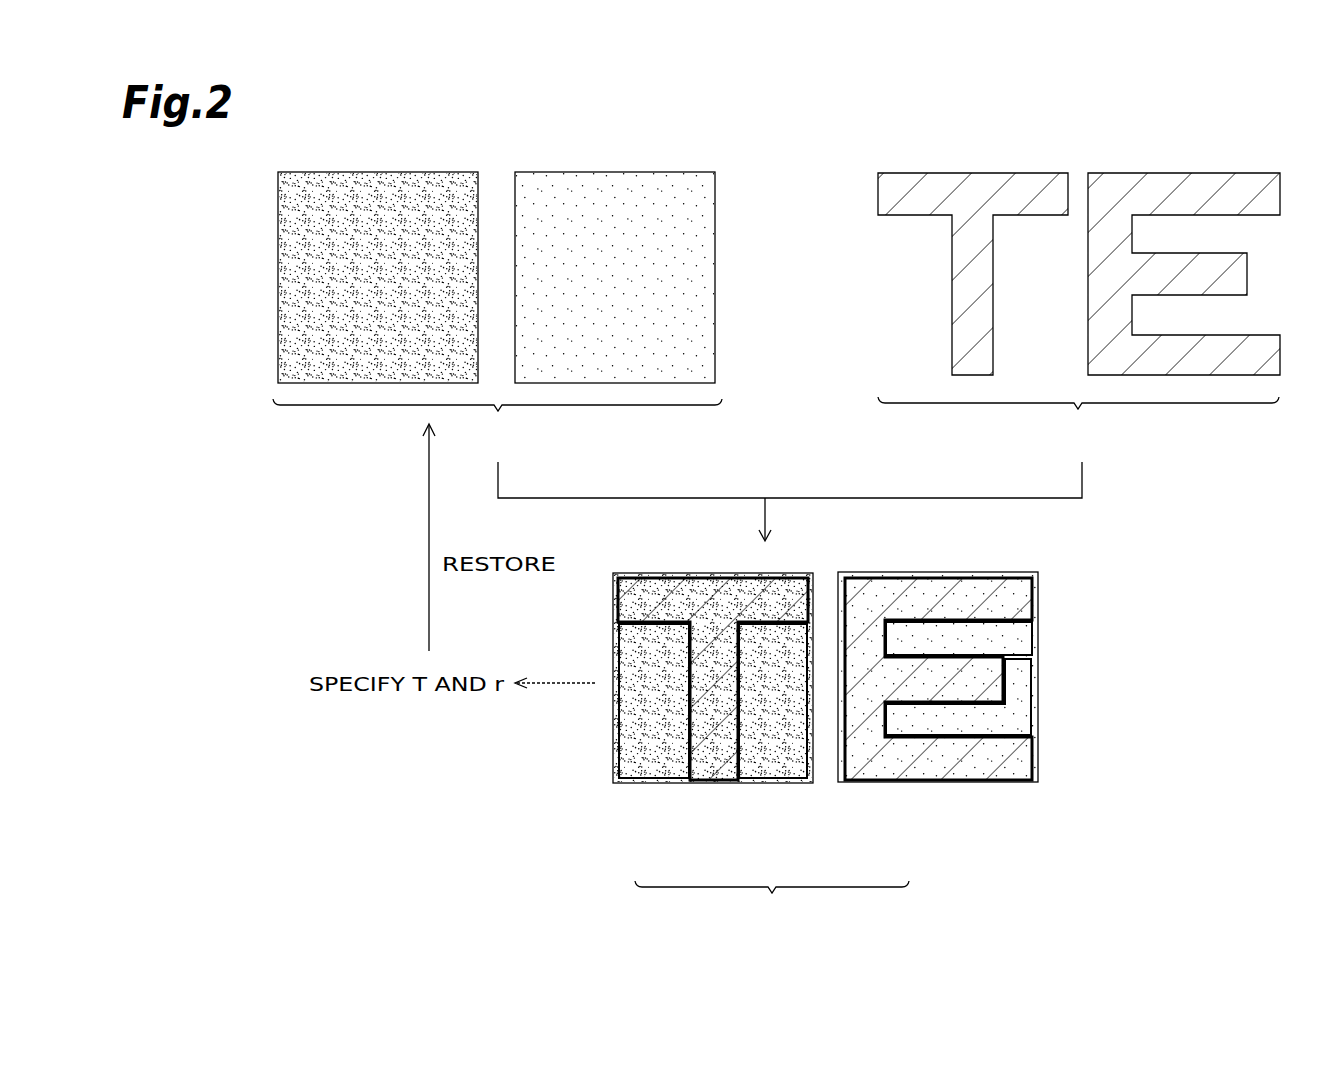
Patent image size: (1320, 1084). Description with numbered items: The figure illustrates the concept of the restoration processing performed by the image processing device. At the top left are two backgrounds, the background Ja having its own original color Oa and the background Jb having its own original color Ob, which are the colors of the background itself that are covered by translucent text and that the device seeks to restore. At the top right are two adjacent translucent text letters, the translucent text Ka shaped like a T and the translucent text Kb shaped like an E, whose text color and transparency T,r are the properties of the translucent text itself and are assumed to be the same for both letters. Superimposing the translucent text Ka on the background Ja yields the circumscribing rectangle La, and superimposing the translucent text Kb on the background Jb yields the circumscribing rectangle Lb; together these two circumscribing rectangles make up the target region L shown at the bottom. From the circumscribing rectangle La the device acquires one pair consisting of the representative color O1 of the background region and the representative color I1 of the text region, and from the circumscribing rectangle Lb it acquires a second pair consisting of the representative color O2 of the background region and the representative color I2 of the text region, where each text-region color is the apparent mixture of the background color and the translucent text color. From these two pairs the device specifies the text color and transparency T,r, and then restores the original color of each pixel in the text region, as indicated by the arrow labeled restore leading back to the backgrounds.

The background Ja is at (326, 162).
The original color of background Oa is at (422, 188).
The background Jb is at (572, 162).
The original color of background Ob is at (663, 187).
The translucent text Ka is at (973, 167).
The translucent text Kb is at (1187, 167).
The text color and transparency T,r is at (970, 360).
The circumscribing rectangle La is at (658, 790).
The circumscribing rectangle Lb is at (882, 790).
The target region L is at (772, 904).
The representative color of background region O1 is at (632, 738).
The representative color of text region I1 is at (717, 757).
The representative color of text region I2 is at (940, 757).
The representative color of background region O2 is at (1015, 712).